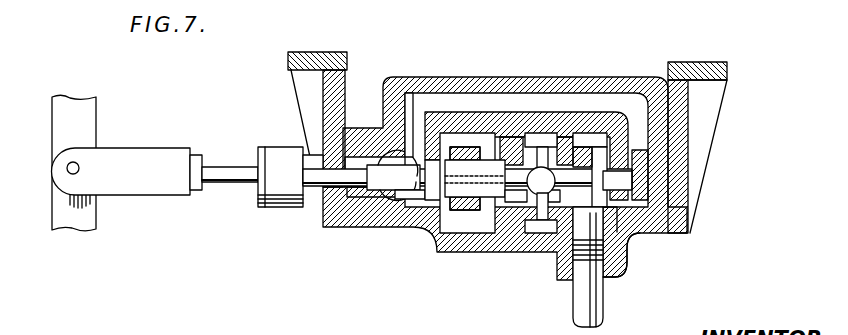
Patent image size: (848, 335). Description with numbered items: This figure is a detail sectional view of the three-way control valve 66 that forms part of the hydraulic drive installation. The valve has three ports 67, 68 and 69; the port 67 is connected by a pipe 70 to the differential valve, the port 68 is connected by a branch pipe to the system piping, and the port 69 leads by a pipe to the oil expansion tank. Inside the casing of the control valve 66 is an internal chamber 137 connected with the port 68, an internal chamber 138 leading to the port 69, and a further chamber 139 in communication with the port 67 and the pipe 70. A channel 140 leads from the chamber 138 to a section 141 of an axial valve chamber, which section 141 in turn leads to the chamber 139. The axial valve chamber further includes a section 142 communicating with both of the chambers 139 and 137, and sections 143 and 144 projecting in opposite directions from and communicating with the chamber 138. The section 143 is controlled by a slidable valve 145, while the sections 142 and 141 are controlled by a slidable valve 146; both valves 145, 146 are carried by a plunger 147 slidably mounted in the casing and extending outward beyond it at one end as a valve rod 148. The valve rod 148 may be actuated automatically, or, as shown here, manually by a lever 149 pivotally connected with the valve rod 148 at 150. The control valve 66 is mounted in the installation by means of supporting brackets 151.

The three-way control valve 66 is at (520, 84).
The port 67 is at (625, 277).
The port 68 is at (550, 167).
The port 69 is at (390, 160).
The pipe 70 is at (604, 312).
The internal chamber 137 is at (527, 227).
The internal chamber 138 is at (407, 199).
The chamber 139 is at (598, 217).
The channel 140 is at (558, 103).
The section of axial valve chamber 141 is at (631, 167).
The section of axial valve chamber 142 is at (518, 200).
The section of axial valve chamber 143 is at (432, 200).
The section of axial valve chamber 144 is at (360, 193).
The slidable valve 145 is at (458, 167).
The slidable valve 146 is at (590, 163).
The plunger 147 is at (413, 148).
The valve rod 148 is at (227, 185).
The lever 149 is at (80, 121).
The pivotal connection 150 is at (70, 171).
The supporting brackets 151 is at (313, 52).